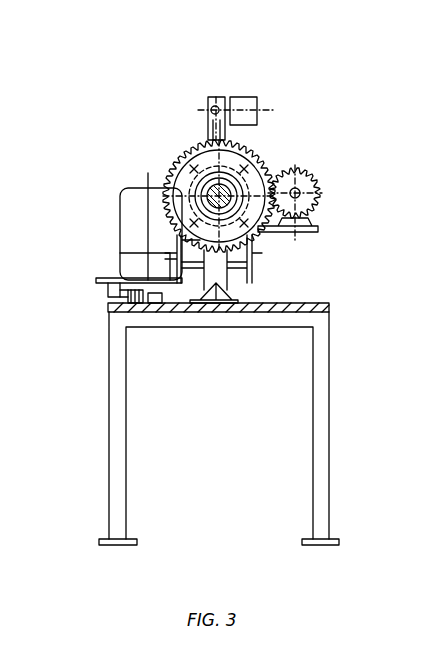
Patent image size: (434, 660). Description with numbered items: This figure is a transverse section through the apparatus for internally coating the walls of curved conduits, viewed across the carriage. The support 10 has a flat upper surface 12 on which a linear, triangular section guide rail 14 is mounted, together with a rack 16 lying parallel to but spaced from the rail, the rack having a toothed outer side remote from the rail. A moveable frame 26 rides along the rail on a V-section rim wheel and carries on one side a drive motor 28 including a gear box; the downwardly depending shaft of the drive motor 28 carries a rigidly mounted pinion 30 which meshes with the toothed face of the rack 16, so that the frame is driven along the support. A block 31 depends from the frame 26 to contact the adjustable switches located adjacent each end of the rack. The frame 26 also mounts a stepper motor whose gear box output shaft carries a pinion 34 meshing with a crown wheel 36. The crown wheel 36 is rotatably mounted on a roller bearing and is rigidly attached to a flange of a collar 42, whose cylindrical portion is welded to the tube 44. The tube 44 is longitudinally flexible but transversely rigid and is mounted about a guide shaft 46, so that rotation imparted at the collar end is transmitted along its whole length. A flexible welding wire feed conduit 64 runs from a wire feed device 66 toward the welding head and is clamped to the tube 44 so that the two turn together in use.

The support 10 is at (121, 452).
The flat upper surface 12 is at (305, 303).
The guide rail 14 is at (228, 294).
The rack 16 is at (153, 303).
The moveable frame 26 is at (252, 251).
The drive motor 28 is at (120, 228).
The pinion 30 is at (128, 300).
The block 31 is at (106, 287).
The pinion 34 is at (320, 193).
The crown wheel 36 is at (253, 151).
The collar 42 is at (198, 177).
The tube 44 is at (190, 165).
The guide shaft 46 is at (178, 157).
The welding wire feed conduit 64 is at (209, 105).
The wire feed device 66 is at (240, 98).